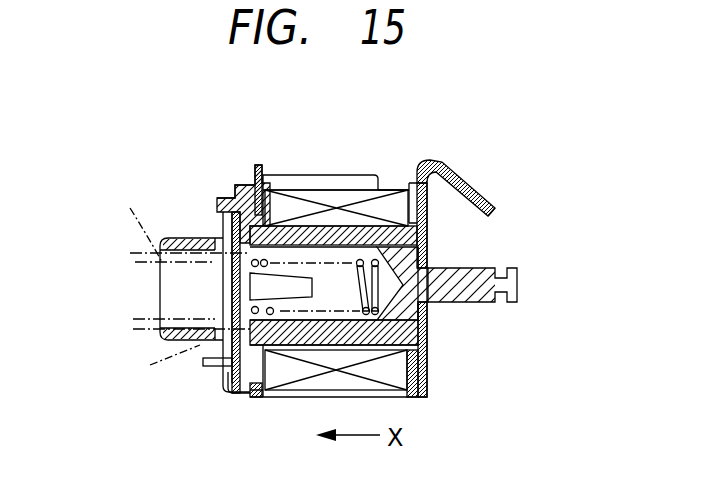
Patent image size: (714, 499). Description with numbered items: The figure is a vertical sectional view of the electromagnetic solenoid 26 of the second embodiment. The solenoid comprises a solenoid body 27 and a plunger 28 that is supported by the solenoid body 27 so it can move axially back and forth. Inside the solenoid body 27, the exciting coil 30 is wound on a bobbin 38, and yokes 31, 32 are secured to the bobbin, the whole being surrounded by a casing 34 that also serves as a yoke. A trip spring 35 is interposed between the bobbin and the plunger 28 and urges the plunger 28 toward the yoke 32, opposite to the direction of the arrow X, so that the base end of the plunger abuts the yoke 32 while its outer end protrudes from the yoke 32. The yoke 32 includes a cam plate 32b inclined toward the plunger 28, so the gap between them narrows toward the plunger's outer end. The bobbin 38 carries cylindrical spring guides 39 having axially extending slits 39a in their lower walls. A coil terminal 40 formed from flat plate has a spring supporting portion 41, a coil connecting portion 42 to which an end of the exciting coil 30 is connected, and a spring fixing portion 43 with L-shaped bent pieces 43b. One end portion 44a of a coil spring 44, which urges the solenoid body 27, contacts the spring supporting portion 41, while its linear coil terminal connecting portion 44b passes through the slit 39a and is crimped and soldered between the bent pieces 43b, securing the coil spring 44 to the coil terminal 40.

The electromagnetic solenoid 26 is at (462, 172).
The solenoid body 27 is at (230, 192).
The plunger 28 is at (487, 303).
The exciting coil 30 is at (383, 193).
The yoke 31 is at (322, 226).
The yoke 32 is at (428, 245).
The cam plate 32b is at (492, 208).
The casing 34 is at (292, 176).
The trip spring 35 is at (352, 226).
The bobbin 38 is at (236, 210).
The spring guide 39 is at (215, 278).
The slit 39a is at (215, 302).
The coil terminal 40 is at (195, 236).
The spring supporting portion 41 is at (223, 280).
The coil connecting portion 42 is at (256, 170).
The spring fixing portion 43 is at (235, 397).
The bent piece 43b is at (197, 367).
The coil spring 44 is at (134, 212).
The one end portion 44a is at (150, 365).
The coil terminal connecting portion 44b is at (228, 378).